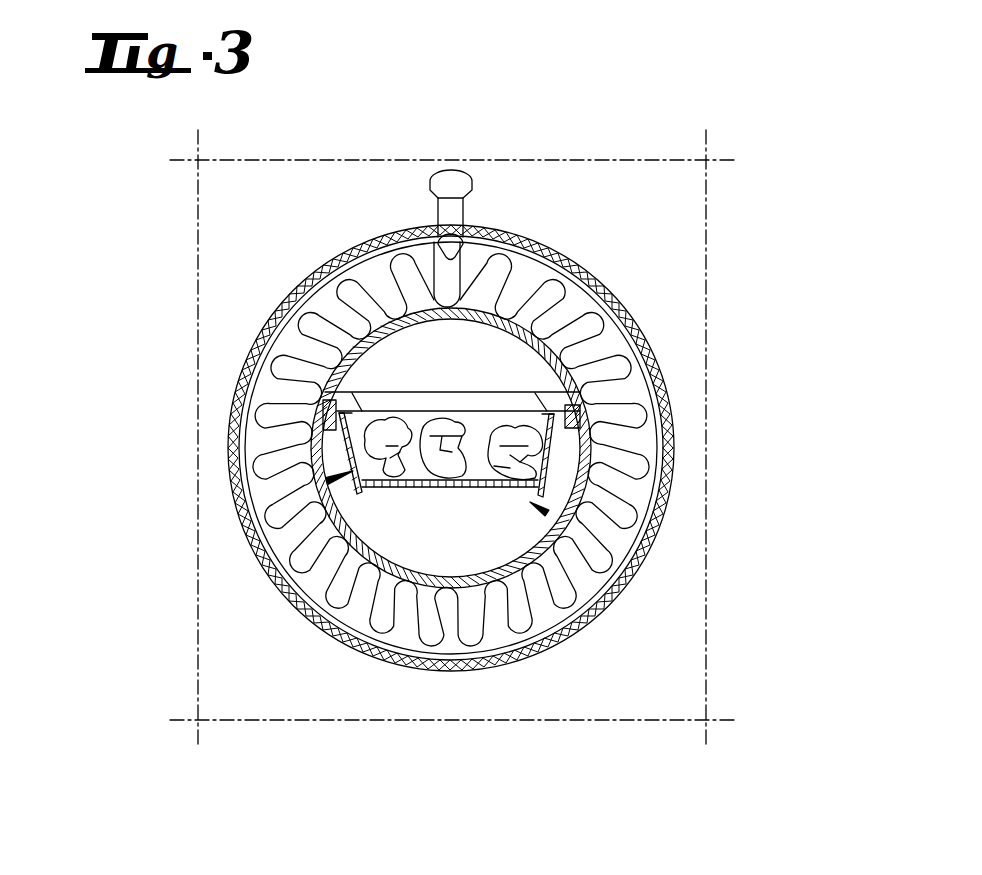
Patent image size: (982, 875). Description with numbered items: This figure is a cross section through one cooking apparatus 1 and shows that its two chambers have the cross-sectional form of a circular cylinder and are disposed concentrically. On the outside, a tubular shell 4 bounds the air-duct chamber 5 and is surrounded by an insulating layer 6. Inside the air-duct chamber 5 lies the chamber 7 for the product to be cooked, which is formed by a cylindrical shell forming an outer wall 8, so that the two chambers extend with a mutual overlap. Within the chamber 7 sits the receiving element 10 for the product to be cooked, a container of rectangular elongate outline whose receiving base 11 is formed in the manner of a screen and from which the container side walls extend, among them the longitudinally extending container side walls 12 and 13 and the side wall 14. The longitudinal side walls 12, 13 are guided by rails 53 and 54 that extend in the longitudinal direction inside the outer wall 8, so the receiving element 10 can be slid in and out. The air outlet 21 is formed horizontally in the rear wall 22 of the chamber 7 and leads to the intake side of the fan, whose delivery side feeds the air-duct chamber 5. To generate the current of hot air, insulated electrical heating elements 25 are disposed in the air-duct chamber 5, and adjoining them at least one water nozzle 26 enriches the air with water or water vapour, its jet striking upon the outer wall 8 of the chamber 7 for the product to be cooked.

The apparatus 1 is at (758, 217).
The tubular shell 4 is at (460, 655).
The air-duct chamber 5 is at (412, 660).
The insulating layer 6 is at (483, 655).
The chamber for the product to be cooked 7 is at (547, 513).
The outer wall 8 is at (512, 322).
The receiving element for the product to be cooked 10 is at (327, 481).
The receiving base 11 is at (428, 487).
The container side wall 12 is at (350, 443).
The container side wall 13 is at (548, 462).
The container side wall 14 is at (478, 432).
The air outlet 21 is at (427, 400).
The rear wall 22 is at (367, 518).
The heating element 25 is at (327, 417).
The water nozzle 26 is at (447, 207).
The rail 53 is at (332, 400).
The rail 54 is at (325, 424).